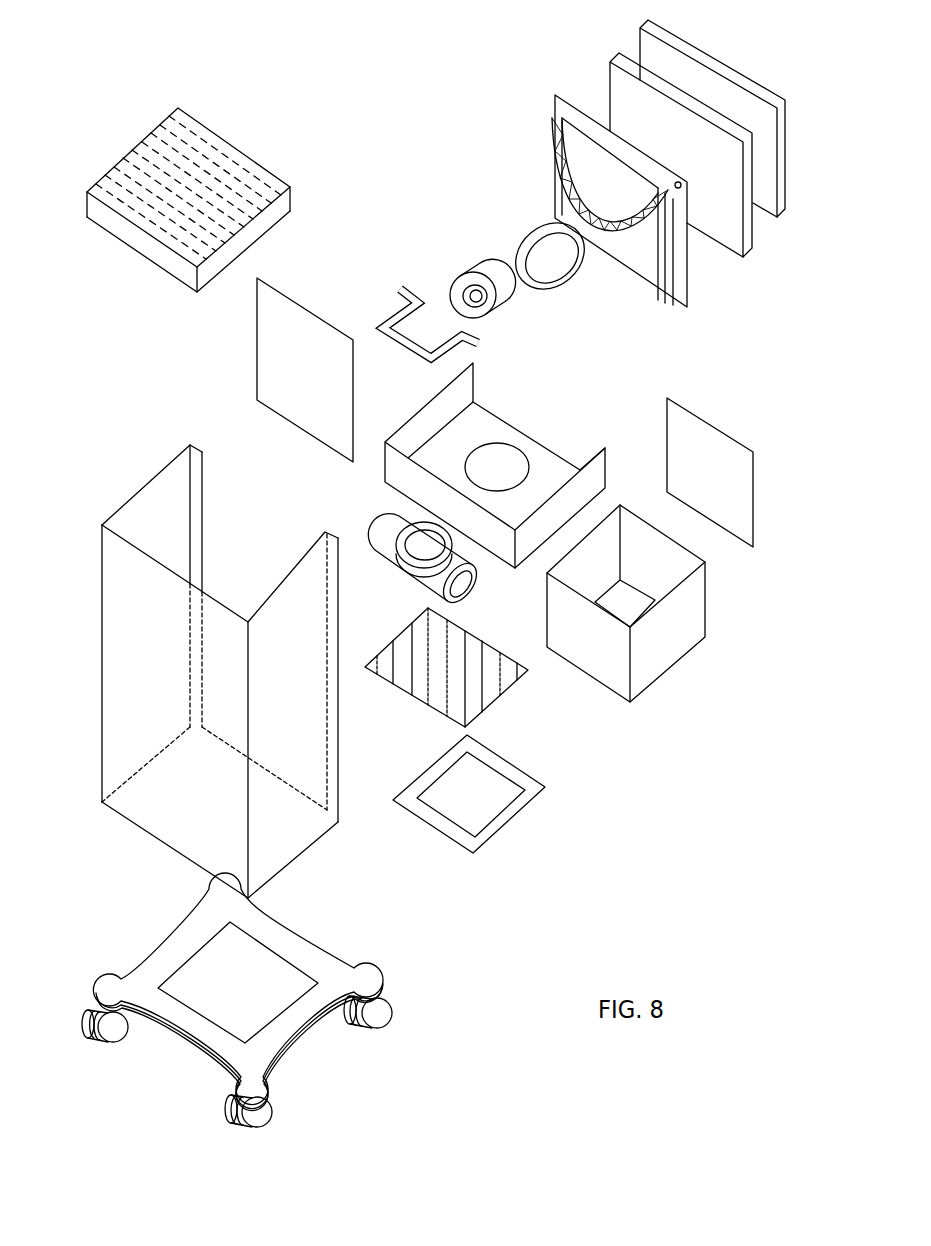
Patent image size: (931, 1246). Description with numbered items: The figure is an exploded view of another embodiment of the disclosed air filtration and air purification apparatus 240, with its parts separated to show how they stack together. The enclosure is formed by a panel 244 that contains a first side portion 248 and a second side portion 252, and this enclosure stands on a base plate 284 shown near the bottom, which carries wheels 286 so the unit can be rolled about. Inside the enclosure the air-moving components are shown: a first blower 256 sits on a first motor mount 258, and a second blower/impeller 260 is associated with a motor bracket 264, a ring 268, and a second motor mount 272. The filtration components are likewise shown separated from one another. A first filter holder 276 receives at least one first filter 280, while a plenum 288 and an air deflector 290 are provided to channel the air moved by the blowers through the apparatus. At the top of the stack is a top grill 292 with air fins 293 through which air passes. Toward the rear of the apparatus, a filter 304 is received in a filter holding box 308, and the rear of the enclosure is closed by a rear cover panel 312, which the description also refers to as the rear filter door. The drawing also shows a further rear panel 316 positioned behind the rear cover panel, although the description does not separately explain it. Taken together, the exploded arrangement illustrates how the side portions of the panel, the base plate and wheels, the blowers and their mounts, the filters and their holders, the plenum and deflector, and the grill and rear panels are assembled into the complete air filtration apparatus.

The air filtration apparatus 240 is at (100, 498).
The panel 244 is at (122, 663).
The first side portion 248 is at (310, 820).
The second side portion 252 is at (175, 478).
The first blower 256 is at (392, 517).
The first motor mount 258 is at (493, 413).
The second blower/impeller 260 is at (477, 257).
The motor bracket 264 is at (419, 297).
The ring 268 is at (553, 180).
The second motor mount 272 is at (480, 700).
The first filter holder 276 is at (542, 783).
The first filter 280 is at (690, 648).
The base plate 284 is at (372, 977).
The wheels 286 is at (376, 1023).
The plenum 288 is at (255, 373).
The air deflector 290 is at (645, 150).
The top grill 292 is at (122, 163).
The air fins 293 is at (233, 190).
The filter 304 is at (727, 216).
The filter holding box 308 is at (553, 95).
The rear cover panel 312 is at (755, 493).
The door panel 316 is at (715, 62).